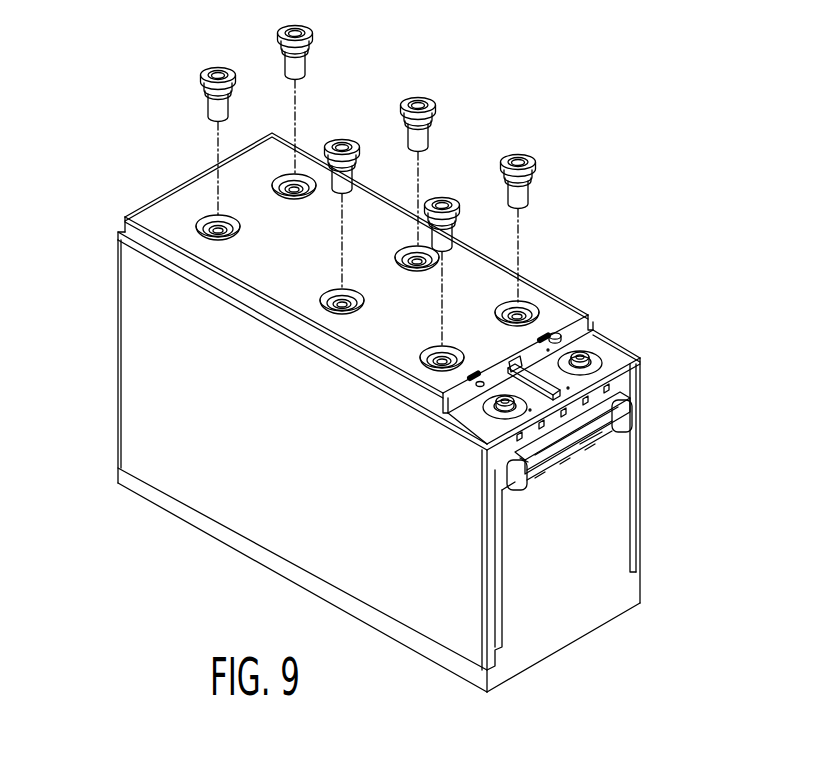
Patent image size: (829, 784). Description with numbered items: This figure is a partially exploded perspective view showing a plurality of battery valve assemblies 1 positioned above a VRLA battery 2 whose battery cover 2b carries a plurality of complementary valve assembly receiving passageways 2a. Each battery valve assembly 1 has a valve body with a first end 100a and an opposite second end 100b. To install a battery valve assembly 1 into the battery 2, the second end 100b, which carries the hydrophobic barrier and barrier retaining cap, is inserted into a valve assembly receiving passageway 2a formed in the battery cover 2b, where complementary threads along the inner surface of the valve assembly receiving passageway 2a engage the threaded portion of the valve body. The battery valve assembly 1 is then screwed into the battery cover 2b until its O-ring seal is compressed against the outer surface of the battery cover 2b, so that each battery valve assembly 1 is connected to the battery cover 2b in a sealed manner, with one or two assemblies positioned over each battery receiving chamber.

The battery valve assembly 1 is at (536, 157).
The first end 100a is at (510, 155).
The second end 100b is at (531, 199).
The battery 2 is at (142, 347).
The valve assembly receiving passageway 2a is at (215, 226).
The battery cover 2b is at (555, 310).